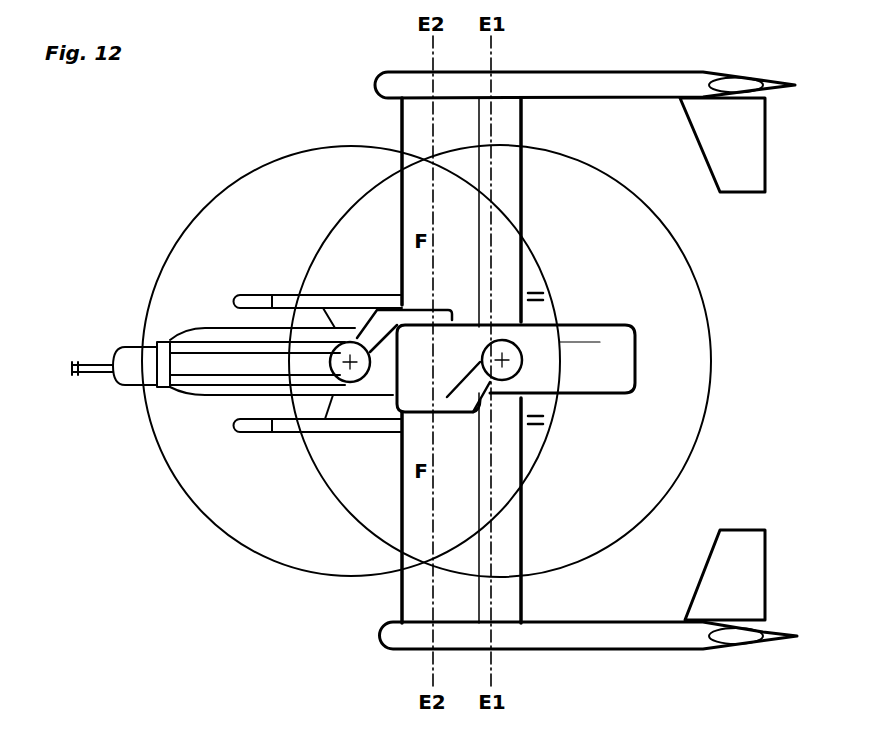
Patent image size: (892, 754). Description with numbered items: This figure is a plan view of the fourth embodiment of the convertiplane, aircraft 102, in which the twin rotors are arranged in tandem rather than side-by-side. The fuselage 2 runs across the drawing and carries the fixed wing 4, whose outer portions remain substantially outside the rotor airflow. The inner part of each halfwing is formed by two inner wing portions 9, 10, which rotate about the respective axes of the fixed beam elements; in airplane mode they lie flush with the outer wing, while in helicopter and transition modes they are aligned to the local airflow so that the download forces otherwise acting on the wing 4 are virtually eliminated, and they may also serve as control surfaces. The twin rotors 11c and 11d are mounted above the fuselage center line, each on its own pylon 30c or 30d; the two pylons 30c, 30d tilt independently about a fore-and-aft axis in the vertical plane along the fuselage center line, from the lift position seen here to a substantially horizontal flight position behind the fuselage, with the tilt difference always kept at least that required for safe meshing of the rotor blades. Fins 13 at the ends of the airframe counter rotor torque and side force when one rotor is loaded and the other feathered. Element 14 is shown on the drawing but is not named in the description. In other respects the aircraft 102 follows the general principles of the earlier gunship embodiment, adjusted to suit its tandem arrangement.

The aircraft 102 is at (115, 167).
The fuselage 2 is at (203, 328).
The wing 4 is at (400, 205).
The inner wing portion 9 is at (503, 195).
The inner wing portion 10 is at (440, 197).
The rotor 11c is at (160, 450).
The rotor 11d is at (692, 262).
The fin 13 is at (723, 147).
The pod 14 is at (600, 373).
The pylon 30c is at (338, 375).
The pylon 30d is at (517, 356).